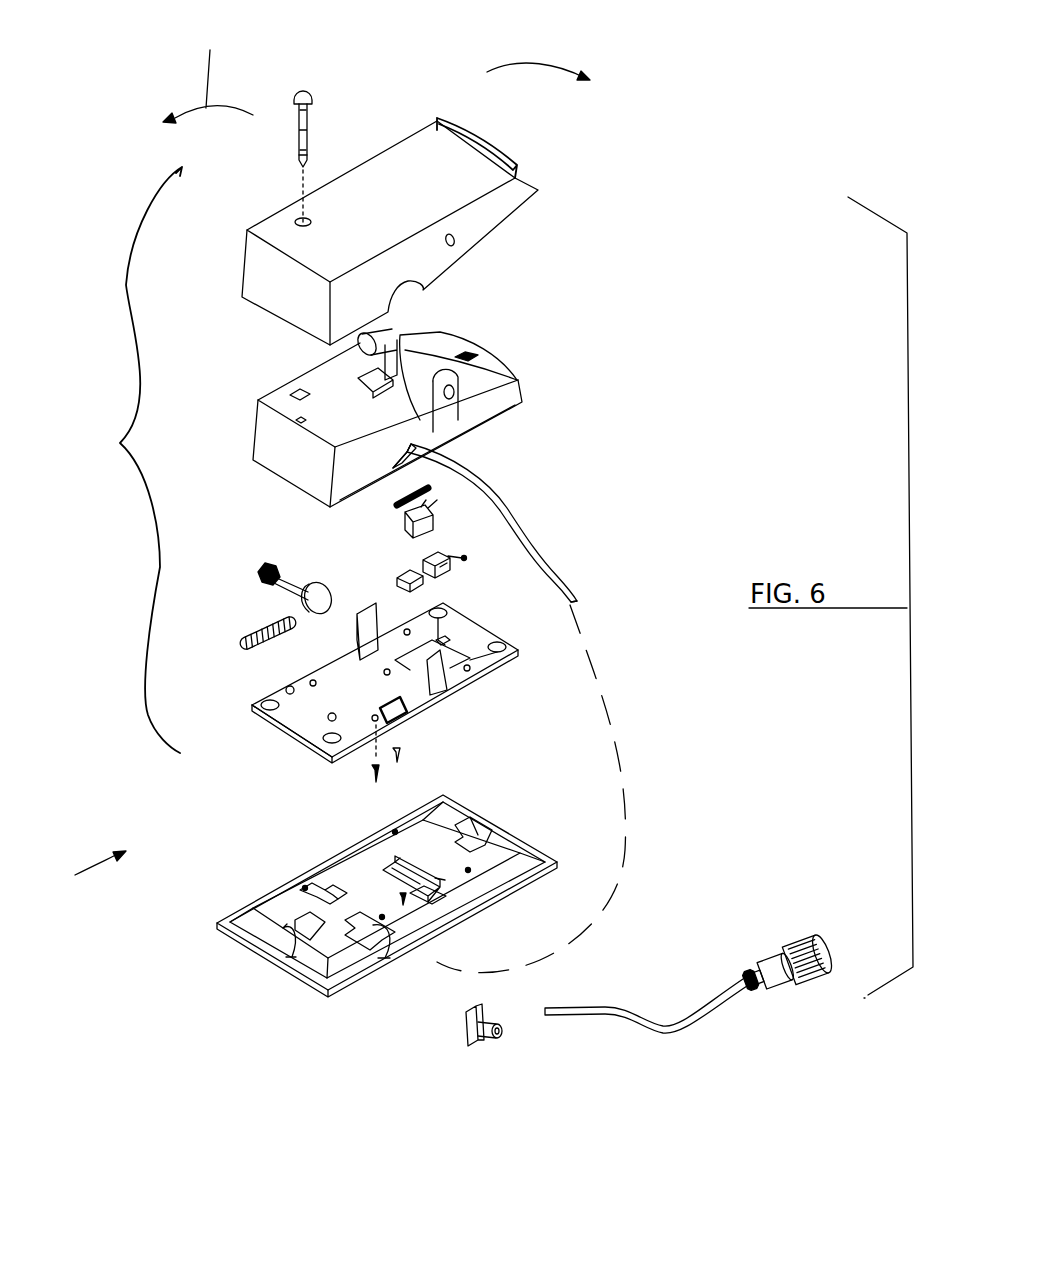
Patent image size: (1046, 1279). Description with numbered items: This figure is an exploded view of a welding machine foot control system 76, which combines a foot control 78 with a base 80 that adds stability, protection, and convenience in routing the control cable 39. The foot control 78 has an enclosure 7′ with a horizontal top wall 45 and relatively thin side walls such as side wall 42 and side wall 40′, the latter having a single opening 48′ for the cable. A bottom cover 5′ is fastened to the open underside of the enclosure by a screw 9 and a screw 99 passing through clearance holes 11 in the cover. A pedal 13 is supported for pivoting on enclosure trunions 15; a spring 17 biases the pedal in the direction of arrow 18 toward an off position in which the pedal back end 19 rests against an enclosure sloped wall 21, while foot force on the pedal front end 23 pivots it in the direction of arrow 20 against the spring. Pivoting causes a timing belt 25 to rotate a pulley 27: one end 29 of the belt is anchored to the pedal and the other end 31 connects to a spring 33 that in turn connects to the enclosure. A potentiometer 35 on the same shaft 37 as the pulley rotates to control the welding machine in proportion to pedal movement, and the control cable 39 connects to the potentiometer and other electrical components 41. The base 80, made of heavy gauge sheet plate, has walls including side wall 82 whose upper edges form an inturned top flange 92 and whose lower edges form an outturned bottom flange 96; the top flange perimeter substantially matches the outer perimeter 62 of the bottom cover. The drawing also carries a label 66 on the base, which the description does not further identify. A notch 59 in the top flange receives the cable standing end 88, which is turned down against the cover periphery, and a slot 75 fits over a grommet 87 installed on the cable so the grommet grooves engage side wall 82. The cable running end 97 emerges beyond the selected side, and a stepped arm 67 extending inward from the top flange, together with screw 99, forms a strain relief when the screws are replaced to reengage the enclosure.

The bottom cover 5′ is at (272, 732).
The enclosure 7′ is at (500, 422).
The screw 9 is at (368, 772).
The clearance holes 11 is at (384, 723).
The pedal 13 is at (522, 219).
The enclosure trunions 15 is at (450, 345).
The spring 17 is at (255, 633).
The arrow 18 is at (538, 49).
The pedal back end 19 is at (523, 192).
The arrow 20 is at (208, 73).
The sloped wall 21 is at (500, 370).
The pedal front end 23 is at (275, 237).
The timing belt 25 is at (307, 125).
The pulley 27 is at (275, 566).
The timing belt end 29 is at (306, 88).
The timing belt other end 31 is at (306, 158).
The spring 33 is at (425, 497).
The potentiometer 35 is at (323, 600).
The shaft 37 is at (282, 580).
The control cable 39 is at (525, 545).
The side wall 40′ is at (510, 395).
The electrical components 41 is at (467, 558).
The side wall 42 is at (280, 436).
The horizontal top wall 45 is at (283, 402).
The opening 48′ is at (408, 458).
The notch 59 is at (400, 905).
The outer perimeter 62 is at (492, 670).
The base plate 66 is at (300, 977).
The stepped arm 67 is at (337, 878).
The slot 75 is at (375, 950).
The welding machine foot control system 76 is at (80, 871).
The foot control 78 is at (132, 460).
The base 80 is at (268, 966).
The side wall 82 is at (346, 968).
The grommet 87 is at (489, 1045).
The cable standing end 88 is at (430, 470).
The top flange 92 is at (415, 875).
The bottom flange 96 is at (247, 938).
The running end 97 is at (583, 1018).
The screw 99 is at (400, 754).